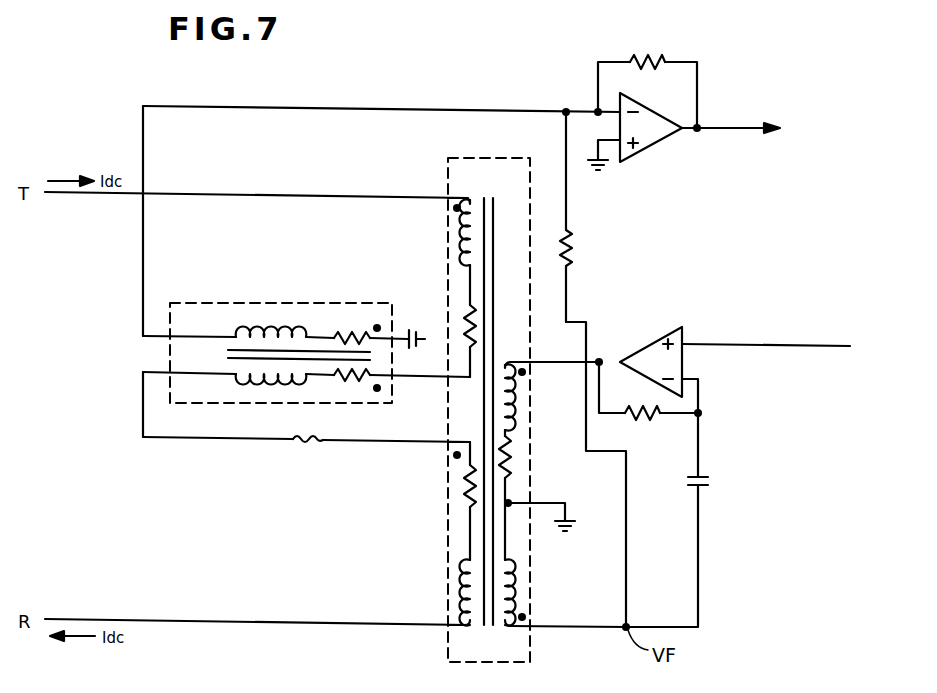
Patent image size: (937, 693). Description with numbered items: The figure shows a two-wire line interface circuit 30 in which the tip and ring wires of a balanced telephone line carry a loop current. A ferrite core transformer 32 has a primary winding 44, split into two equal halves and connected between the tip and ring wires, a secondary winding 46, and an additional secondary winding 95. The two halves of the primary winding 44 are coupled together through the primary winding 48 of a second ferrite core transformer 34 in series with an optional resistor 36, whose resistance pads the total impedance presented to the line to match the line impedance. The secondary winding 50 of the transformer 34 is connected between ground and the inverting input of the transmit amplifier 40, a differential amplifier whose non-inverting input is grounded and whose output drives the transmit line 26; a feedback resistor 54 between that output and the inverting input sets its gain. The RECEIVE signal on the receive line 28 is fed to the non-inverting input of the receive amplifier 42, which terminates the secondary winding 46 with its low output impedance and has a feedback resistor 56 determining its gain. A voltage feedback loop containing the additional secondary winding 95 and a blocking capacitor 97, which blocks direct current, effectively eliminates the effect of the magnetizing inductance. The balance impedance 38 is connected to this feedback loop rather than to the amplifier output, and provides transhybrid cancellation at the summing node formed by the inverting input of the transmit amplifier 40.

The transmit line 26 is at (716, 132).
The receive line 28 is at (713, 345).
The two-wire line interface circuit 30 is at (488, 92).
The transformer 32 is at (448, 170).
The transformer 34 is at (238, 302).
The optional resistor 36 is at (304, 440).
The balance impedance 38 is at (572, 248).
The transmit amplifier 40 is at (654, 140).
The receive amplifier 42 is at (642, 347).
The primary winding 44 is at (460, 233).
The secondary winding 46 is at (516, 412).
The primary winding 48 is at (280, 380).
The secondary winding 50 is at (283, 338).
The feedback resistor 54 is at (648, 58).
The feedback resistor 56 is at (680, 438).
The additional secondary winding 95 is at (518, 590).
The blocking capacitor 97 is at (712, 480).